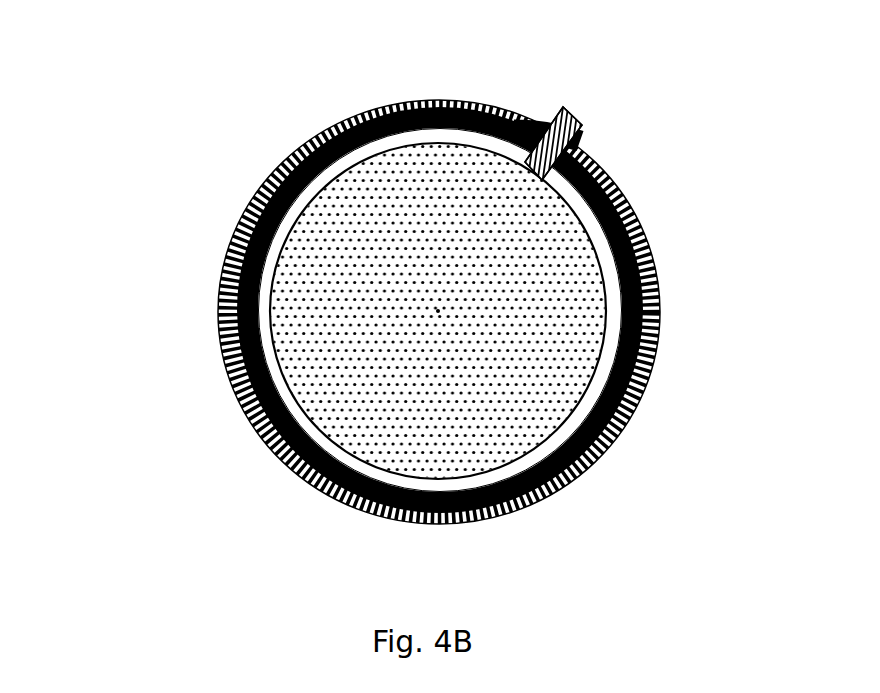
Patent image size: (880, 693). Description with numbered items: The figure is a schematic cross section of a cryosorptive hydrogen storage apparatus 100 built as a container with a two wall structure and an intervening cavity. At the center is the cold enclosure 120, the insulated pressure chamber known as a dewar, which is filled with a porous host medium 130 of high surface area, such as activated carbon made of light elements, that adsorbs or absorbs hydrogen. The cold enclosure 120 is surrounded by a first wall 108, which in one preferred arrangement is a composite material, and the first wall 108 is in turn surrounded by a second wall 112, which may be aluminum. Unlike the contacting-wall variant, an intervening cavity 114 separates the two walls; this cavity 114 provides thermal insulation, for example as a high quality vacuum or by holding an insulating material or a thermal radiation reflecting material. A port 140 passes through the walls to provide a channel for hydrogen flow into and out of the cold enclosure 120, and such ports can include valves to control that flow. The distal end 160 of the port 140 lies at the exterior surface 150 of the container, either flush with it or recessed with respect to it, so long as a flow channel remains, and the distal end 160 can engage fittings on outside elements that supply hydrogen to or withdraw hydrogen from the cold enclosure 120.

The cryosorptive storage apparatus 100 is at (252, 146).
The first wall 108 is at (282, 235).
The second wall 112 is at (220, 293).
The intervening cavity 114 is at (233, 375).
The cold enclosure 120 is at (547, 332).
The host medium 130 is at (442, 197).
The port 140 is at (557, 140).
The exterior surface 150 is at (272, 450).
The distal end 160 is at (577, 125).